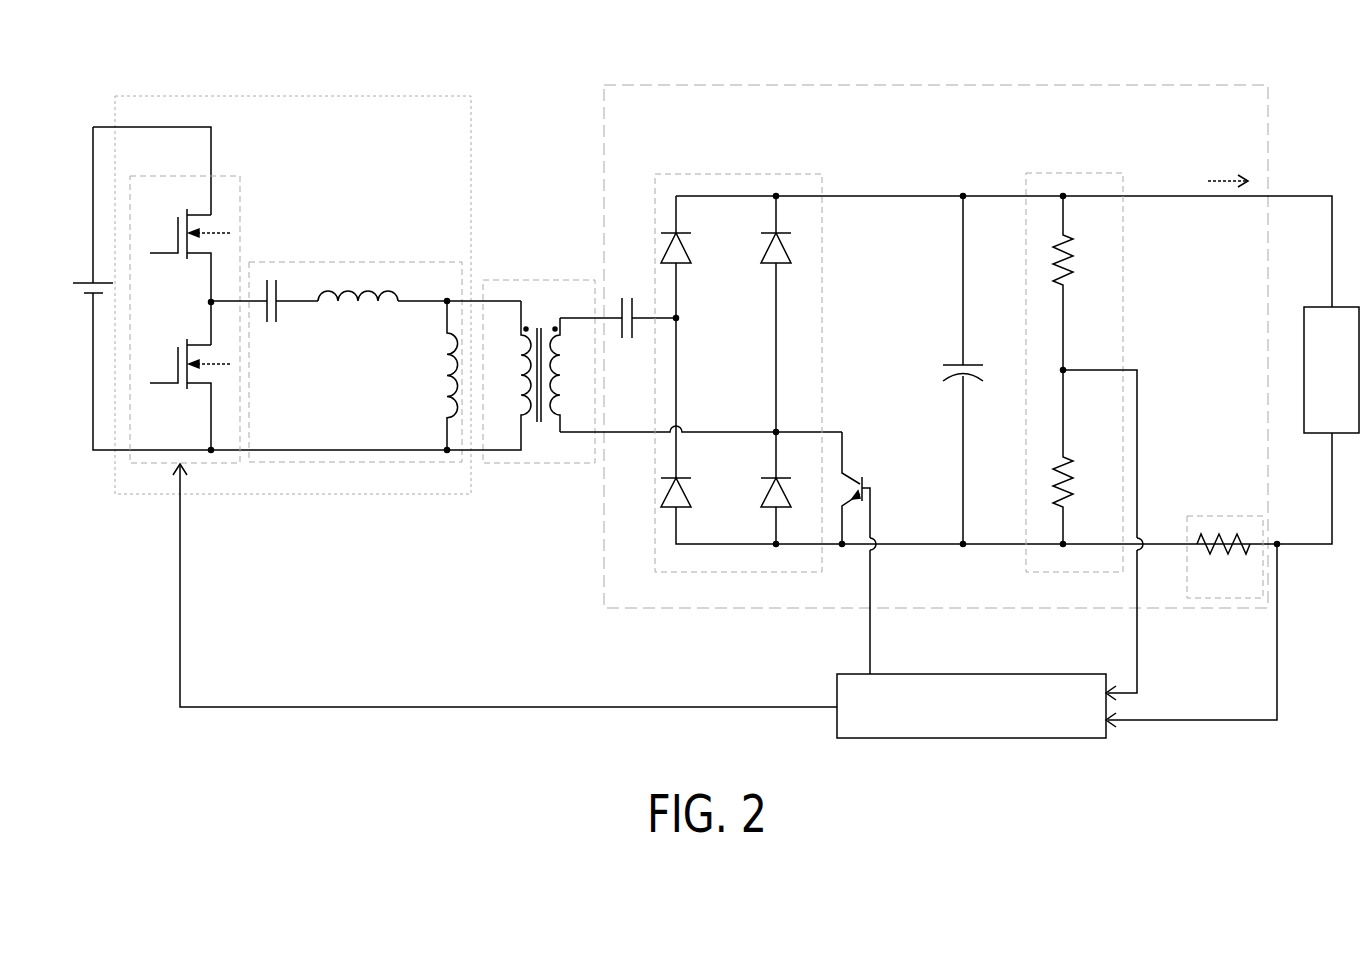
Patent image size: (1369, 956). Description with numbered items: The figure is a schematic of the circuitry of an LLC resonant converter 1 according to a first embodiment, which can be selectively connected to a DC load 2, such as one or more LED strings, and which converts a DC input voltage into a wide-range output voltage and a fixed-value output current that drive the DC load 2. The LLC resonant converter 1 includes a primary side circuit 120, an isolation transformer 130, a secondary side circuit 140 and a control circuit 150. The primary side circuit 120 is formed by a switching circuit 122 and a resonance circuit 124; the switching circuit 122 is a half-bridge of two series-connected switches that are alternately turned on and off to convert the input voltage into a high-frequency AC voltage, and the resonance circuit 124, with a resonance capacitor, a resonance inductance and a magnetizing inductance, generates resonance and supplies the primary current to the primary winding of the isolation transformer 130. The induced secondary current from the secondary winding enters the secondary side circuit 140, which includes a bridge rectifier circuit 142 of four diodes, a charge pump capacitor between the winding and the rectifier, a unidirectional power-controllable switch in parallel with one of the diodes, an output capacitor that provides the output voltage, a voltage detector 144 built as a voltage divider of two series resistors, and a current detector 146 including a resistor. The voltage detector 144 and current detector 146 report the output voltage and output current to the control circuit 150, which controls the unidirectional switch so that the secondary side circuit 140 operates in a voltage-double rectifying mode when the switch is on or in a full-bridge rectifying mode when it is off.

The LLC resonant converter 1 is at (1340, 73).
The DC load 2 is at (1340, 307).
The primary side circuit 120 is at (425, 96).
The switching circuit 122 is at (228, 176).
The resonance circuit 124 is at (345, 262).
The isolation transformer 130 is at (505, 280).
The secondary side circuit 140 is at (652, 85).
The bridge rectifier circuit 142 is at (762, 174).
The voltage detector 144 is at (1100, 173).
The current detector 146 is at (1197, 516).
The control circuit 150 is at (973, 674).